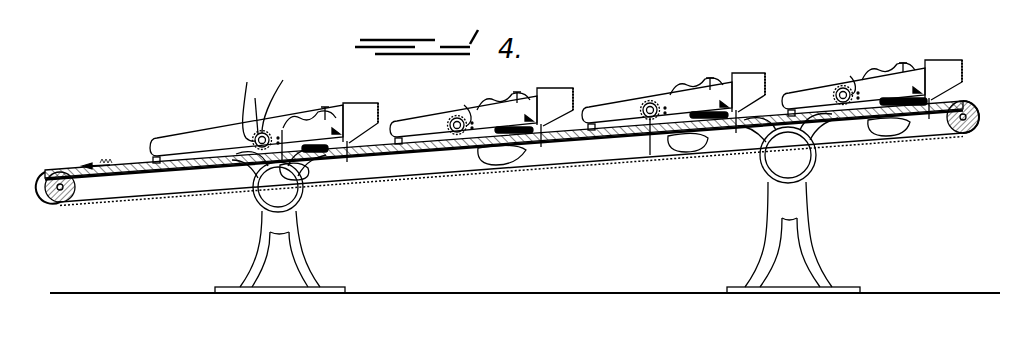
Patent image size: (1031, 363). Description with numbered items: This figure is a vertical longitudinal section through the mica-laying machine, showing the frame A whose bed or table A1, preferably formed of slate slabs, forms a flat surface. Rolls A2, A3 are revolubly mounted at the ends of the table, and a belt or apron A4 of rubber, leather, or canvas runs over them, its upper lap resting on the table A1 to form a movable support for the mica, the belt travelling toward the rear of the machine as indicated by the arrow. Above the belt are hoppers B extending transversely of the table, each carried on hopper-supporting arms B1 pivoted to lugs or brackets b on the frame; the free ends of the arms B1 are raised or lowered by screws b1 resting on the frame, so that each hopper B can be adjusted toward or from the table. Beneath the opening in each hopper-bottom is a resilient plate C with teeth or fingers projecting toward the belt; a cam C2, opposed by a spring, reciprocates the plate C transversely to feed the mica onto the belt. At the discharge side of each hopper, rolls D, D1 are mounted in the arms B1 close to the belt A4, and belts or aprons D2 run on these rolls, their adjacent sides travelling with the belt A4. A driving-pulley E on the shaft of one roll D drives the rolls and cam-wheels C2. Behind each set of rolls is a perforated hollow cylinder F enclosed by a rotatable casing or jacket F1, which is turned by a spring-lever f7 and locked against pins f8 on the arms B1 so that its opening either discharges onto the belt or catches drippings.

The frame of the machine A is at (110, 171).
The bed or table A1 is at (430, 150).
The roll A2 is at (981, 116).
The roll A3 is at (44, 188).
The belt or apron A4 is at (143, 192).
The hopper B is at (361, 107).
The hopper-supporting arm B1 is at (208, 136).
The lug or bracket b is at (156, 156).
The screw b1 is at (325, 106).
The plate C is at (348, 143).
The cam C2 is at (297, 113).
The roll D is at (578, 113).
The roll D1 is at (619, 105).
The belt or apron D2 is at (330, 153).
The driving-pulley E is at (902, 128).
The perforated hollow cylinder F is at (281, 129).
The casing or jacket F1 is at (276, 131).
The lever f7 is at (267, 107).
The pin f8 is at (544, 100).